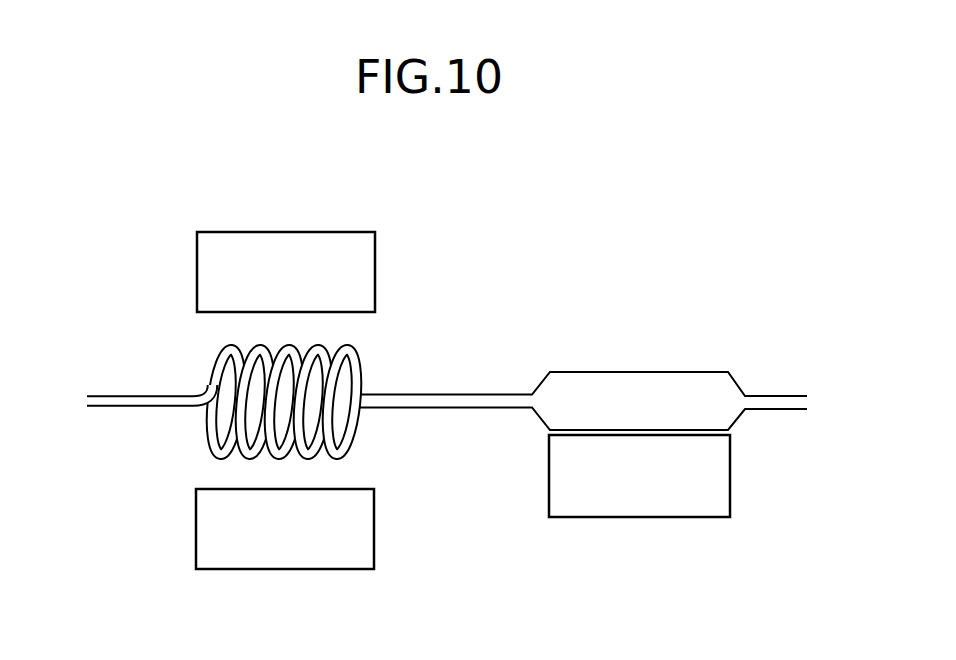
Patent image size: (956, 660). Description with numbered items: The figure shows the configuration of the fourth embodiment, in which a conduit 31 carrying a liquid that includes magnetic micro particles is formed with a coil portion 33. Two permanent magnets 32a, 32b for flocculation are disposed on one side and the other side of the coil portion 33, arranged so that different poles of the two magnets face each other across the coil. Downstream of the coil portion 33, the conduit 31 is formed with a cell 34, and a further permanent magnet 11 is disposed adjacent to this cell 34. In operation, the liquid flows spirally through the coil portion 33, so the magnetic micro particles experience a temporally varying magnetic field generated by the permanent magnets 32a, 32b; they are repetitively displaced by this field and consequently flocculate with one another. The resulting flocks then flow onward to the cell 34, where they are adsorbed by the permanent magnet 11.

The conduit 31 is at (135, 395).
The coil portion 33 is at (358, 376).
The cell 34 is at (700, 372).
The permanent magnet for flocculation 32a is at (374, 522).
The permanent magnet for flocculation 32b is at (375, 266).
The permanent magnet 11 is at (693, 518).